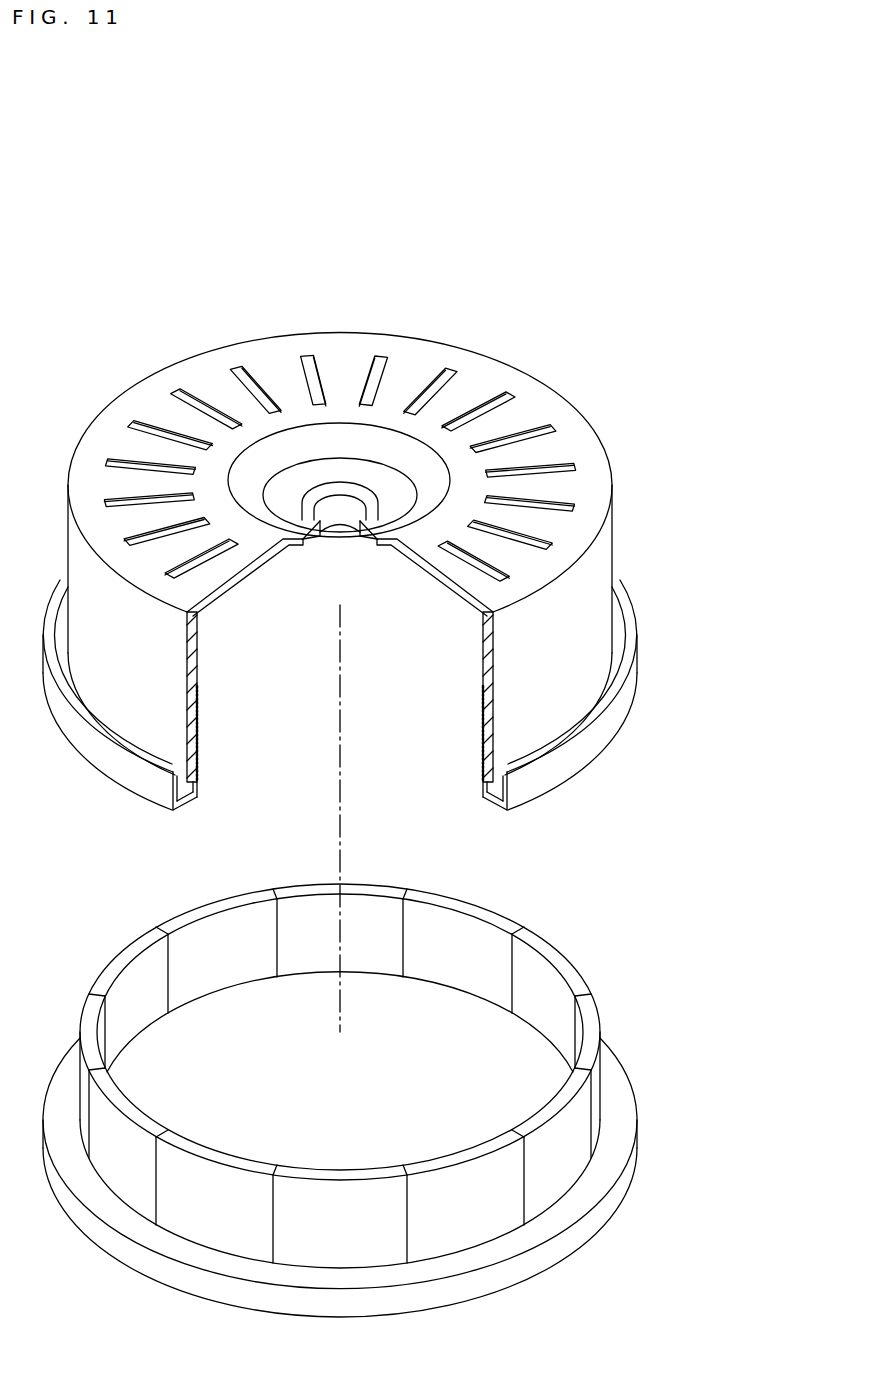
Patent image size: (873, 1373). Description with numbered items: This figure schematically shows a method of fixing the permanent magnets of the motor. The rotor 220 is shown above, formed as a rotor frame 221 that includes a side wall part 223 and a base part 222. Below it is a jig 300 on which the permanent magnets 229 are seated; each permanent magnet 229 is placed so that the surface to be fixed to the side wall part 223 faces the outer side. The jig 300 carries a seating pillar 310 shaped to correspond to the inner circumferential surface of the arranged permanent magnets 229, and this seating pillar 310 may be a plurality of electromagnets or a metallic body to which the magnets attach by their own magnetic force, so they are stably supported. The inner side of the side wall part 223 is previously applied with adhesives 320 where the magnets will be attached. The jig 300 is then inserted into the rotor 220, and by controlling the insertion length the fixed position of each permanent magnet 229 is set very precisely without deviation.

The rotor 220 is at (492, 305).
The rotor frame 221 is at (572, 396).
The base part 222 is at (340, 342).
The side wall part 223 is at (592, 605).
The permanent magnet 229 is at (550, 1180).
The jig 300 is at (642, 1093).
The seating pillar 310 is at (458, 1013).
The adhesives 320 is at (200, 724).